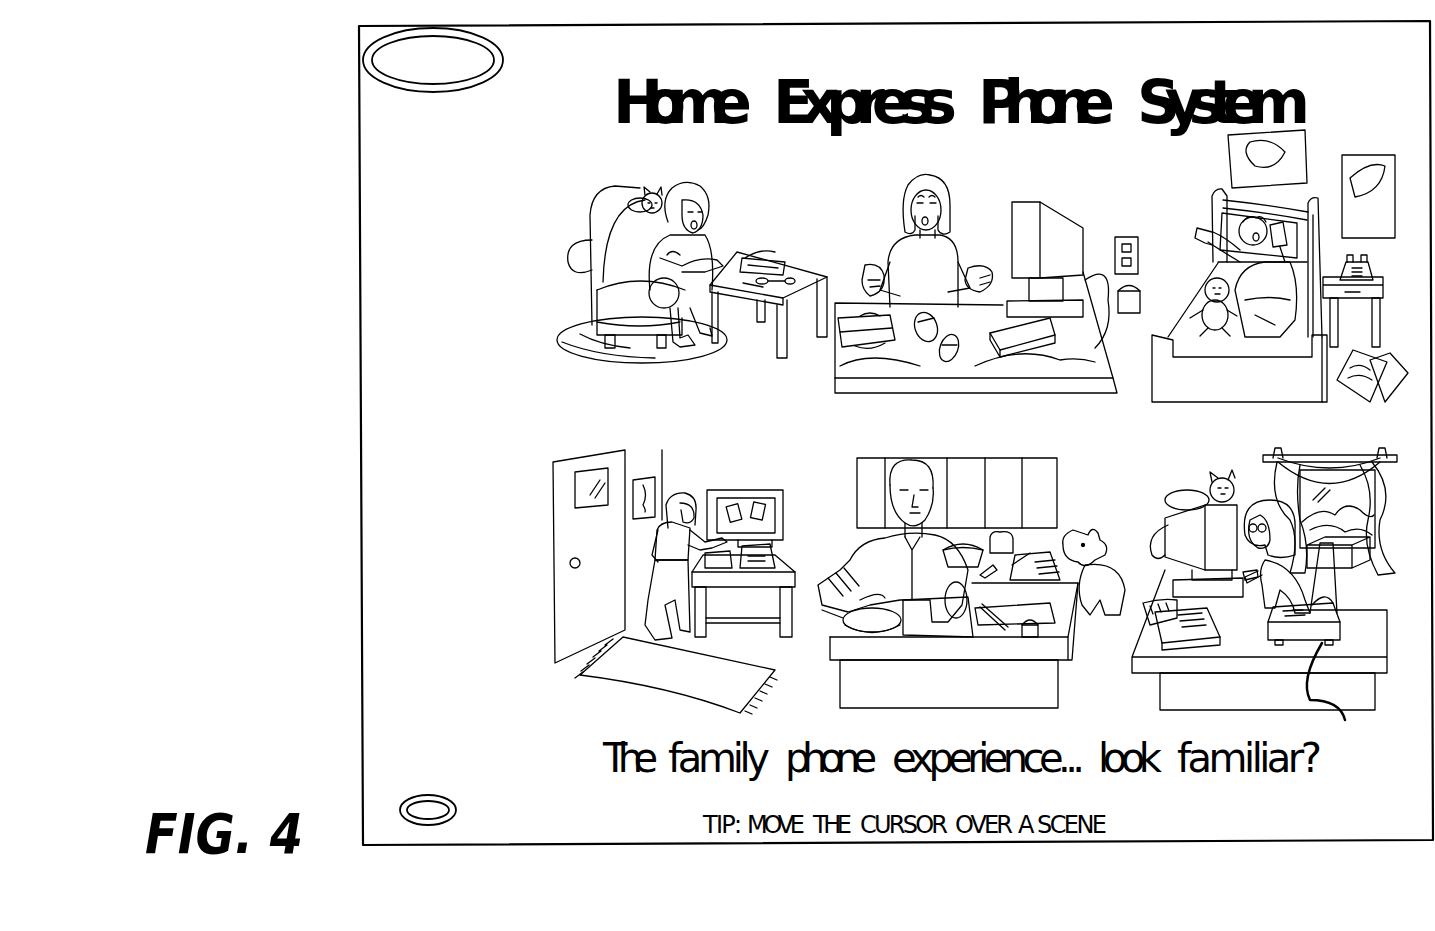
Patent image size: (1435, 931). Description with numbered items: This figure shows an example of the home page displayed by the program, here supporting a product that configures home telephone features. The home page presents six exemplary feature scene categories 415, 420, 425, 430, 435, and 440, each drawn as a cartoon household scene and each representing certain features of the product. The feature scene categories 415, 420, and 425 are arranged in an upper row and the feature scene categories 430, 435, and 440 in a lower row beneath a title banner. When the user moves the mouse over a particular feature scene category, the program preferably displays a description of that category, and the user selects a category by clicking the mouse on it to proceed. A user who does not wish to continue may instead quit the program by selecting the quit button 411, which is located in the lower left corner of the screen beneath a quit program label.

The quit button 411 is at (435, 811).
The feature scene category 415 is at (747, 201).
The feature scene category 420 is at (993, 195).
The feature scene category 425 is at (1325, 147).
The feature scene category 430 is at (703, 468).
The feature scene category 435 is at (1068, 496).
The feature scene category 440 is at (1246, 470).